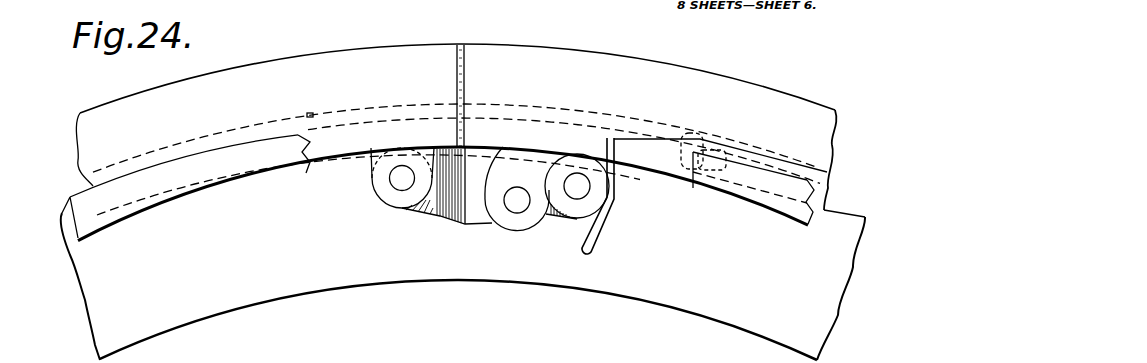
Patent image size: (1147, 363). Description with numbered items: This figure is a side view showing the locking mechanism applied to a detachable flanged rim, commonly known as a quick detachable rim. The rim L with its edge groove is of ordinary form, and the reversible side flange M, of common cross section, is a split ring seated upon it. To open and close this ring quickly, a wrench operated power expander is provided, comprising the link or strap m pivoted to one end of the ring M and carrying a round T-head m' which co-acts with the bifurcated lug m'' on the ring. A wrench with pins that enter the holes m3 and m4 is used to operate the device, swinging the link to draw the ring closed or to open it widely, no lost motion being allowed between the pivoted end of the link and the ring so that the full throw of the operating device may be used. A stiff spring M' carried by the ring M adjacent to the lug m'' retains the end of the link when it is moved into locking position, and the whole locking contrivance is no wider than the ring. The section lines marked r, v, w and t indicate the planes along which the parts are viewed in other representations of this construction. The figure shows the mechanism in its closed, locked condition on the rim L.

The reversible side flange M is at (456, 127).
The rim L is at (236, 170).
The section line r- r is at (234, 338).
The section line v- v is at (411, 335).
The section line w-w / slot w is at (462, 325).
The section line t- t is at (608, 340).
The link or strap m is at (431, 205).
The bifurcated lug m'' is at (513, 155).
The hole m4 is at (517, 210).
The round T-head m' is at (572, 243).
The hole m3 is at (590, 184).
The stiff spring M' is at (704, 197).